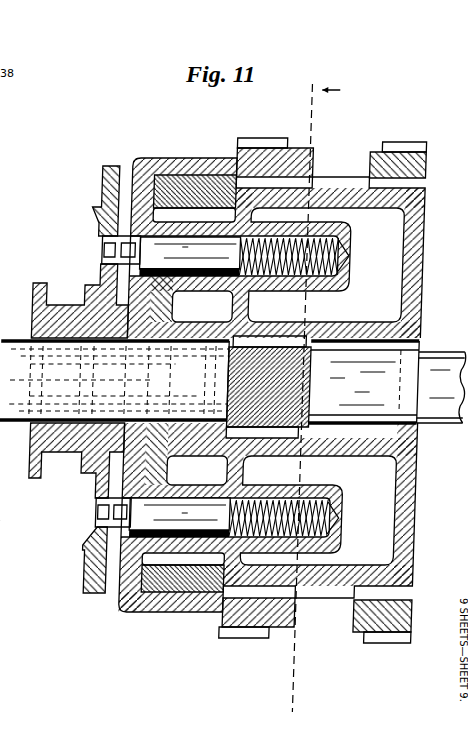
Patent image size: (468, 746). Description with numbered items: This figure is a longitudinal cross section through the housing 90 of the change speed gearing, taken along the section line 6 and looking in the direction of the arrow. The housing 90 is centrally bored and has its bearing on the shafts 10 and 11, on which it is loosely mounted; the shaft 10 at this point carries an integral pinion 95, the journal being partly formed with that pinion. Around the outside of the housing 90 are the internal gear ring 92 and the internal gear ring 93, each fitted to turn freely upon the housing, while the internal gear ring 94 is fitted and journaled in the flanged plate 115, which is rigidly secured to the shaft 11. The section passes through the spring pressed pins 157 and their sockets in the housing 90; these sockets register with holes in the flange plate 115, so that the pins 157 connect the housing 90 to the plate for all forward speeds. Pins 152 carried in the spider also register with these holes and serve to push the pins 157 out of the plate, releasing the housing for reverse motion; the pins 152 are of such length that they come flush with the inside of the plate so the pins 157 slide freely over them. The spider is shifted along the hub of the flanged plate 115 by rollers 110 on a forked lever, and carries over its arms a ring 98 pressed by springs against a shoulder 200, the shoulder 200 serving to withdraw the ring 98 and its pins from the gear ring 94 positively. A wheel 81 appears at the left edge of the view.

The section line 6- 6 is at (313, 399).
The shaft 10 is at (388, 382).
The shaft 11 is at (114, 380).
The wheel 81 is at (12, 555).
The housing 90 is at (272, 400).
The internal gear ring 92 is at (388, 149).
The internal gear ring 93 is at (255, 147).
The internal gear ring 94 is at (170, 598).
The pinion 95 is at (282, 348).
The ring 98 is at (96, 187).
The rollers 110 is at (98, 270).
The flanged plate 115 is at (166, 163).
The pins 152 is at (104, 513).
The spring pressed pins 157 is at (185, 387).
The shoulder 200 is at (106, 557).